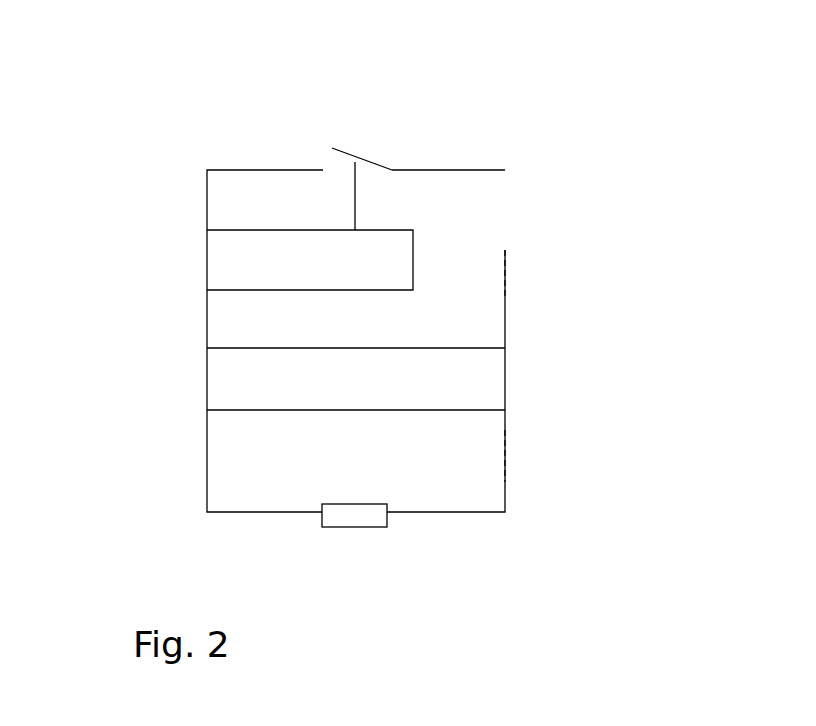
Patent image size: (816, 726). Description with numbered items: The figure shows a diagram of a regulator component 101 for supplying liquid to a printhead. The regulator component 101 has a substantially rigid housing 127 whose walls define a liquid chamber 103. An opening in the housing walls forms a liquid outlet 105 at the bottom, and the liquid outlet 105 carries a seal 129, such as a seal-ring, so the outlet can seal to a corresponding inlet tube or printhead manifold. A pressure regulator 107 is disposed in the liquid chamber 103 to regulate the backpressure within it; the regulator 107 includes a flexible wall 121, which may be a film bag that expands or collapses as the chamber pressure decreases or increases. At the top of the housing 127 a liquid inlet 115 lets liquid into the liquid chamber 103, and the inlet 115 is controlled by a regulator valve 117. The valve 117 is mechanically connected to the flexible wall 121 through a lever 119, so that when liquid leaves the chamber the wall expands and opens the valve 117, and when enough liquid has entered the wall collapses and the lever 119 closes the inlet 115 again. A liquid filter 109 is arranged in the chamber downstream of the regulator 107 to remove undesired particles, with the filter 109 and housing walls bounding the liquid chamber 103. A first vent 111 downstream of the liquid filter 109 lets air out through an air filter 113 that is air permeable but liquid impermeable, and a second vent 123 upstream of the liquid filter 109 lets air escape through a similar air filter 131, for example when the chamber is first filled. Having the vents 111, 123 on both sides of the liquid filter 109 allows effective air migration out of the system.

The regulator component 101 is at (598, 393).
The liquid chamber 103 is at (493, 220).
The liquid outlet 105 is at (353, 533).
The pressure regulator 107 is at (262, 238).
The liquid filter 109 is at (222, 381).
The first vent 111 is at (523, 447).
The air filter 113 is at (505, 467).
The liquid inlet 115 is at (325, 142).
The regulator valve 117 is at (363, 157).
The lever 119 is at (357, 193).
The flexible wall 121 is at (413, 268).
The second vent 123 is at (513, 270).
The housing 127 is at (205, 208).
The seal 129 is at (370, 518).
The air filter 131 is at (505, 293).